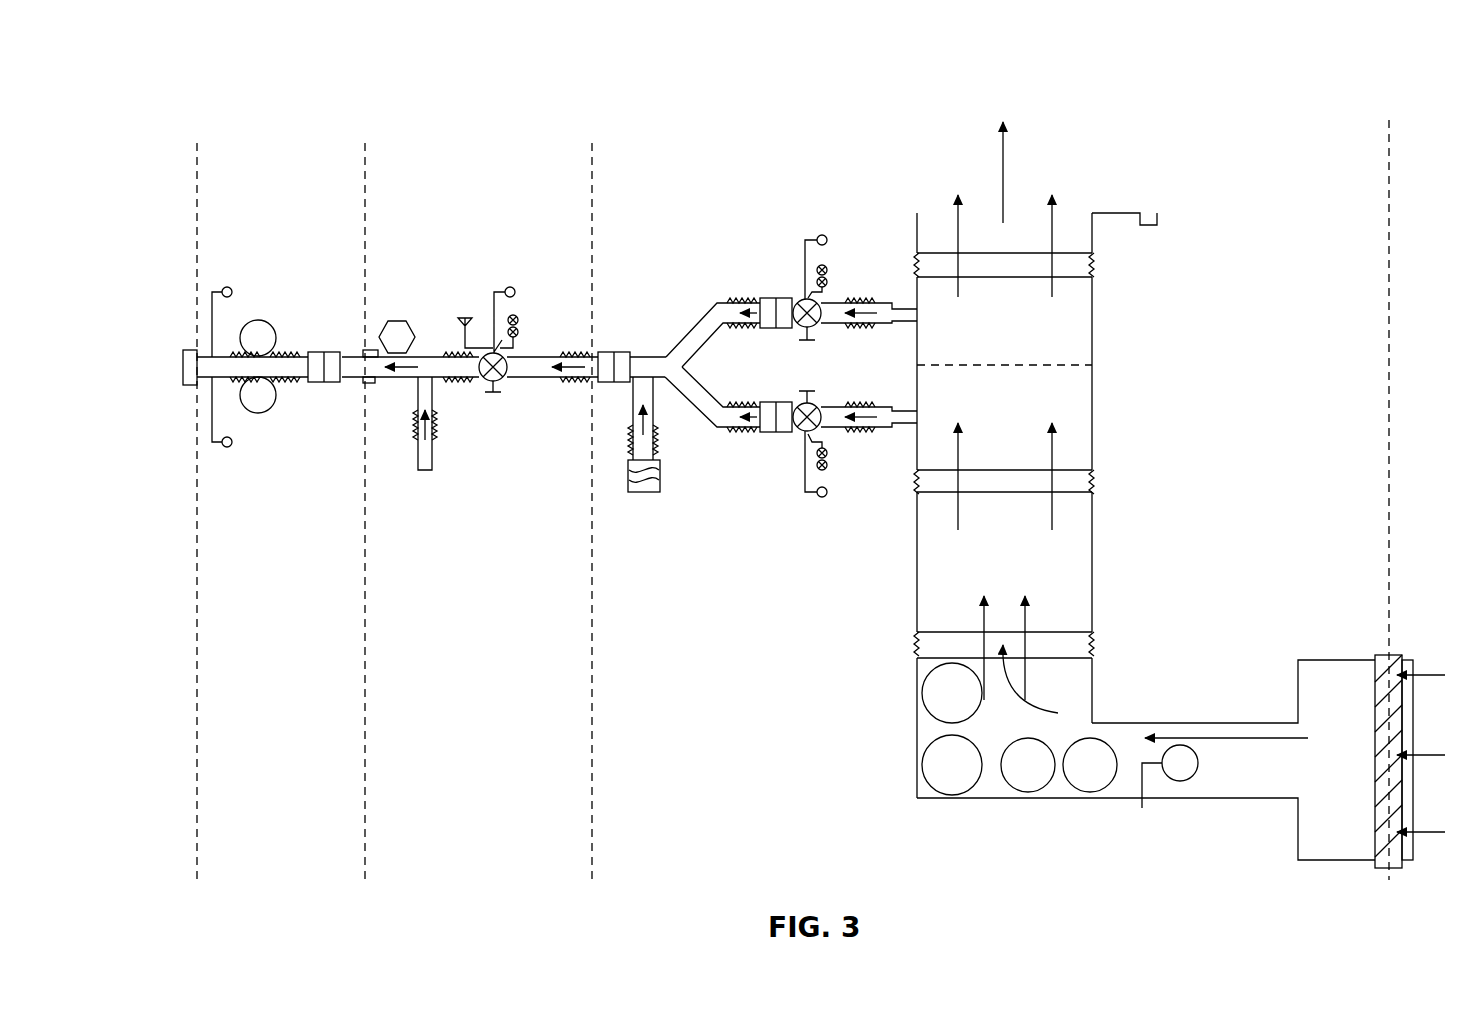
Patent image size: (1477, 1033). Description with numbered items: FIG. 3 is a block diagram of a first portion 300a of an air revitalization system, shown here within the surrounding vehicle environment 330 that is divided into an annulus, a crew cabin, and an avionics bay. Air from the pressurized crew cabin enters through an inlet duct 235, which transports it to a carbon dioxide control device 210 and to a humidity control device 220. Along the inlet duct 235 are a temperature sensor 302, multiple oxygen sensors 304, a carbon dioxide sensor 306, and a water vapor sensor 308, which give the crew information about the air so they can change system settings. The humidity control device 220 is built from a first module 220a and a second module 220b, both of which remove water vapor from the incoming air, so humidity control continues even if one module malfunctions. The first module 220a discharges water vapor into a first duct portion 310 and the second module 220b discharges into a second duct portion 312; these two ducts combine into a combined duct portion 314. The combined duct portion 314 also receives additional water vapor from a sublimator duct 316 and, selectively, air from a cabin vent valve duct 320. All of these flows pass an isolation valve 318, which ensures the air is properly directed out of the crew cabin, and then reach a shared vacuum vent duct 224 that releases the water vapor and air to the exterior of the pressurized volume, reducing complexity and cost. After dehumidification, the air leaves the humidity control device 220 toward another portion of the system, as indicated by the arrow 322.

The vehicle environment 330 is at (163, 70).
The first portion 300a is at (233, 126).
The vacuum vent duct 224 is at (295, 352).
The isolation valve 318 is at (490, 348).
The combined duct portion 314 is at (650, 355).
The cabin vent valve duct 320 is at (417, 420).
The sublimator duct 316 is at (630, 440).
The first duct portion 310 is at (847, 300).
The second duct portion 312 is at (837, 433).
The arrow 322 is at (1000, 170).
The first module 220a is at (1092, 313).
The humidity control device 220 is at (1092, 365).
The second module 220b is at (1092, 425).
The carbon dioxide control device 210 is at (917, 590).
The water vapor sensor 308 is at (928, 688).
The carbon dioxide sensor 306 is at (928, 760).
The oxygen sensors 304 is at (1033, 778).
The temperature sensor 302 is at (1180, 775).
The inlet duct 235 is at (1240, 798).